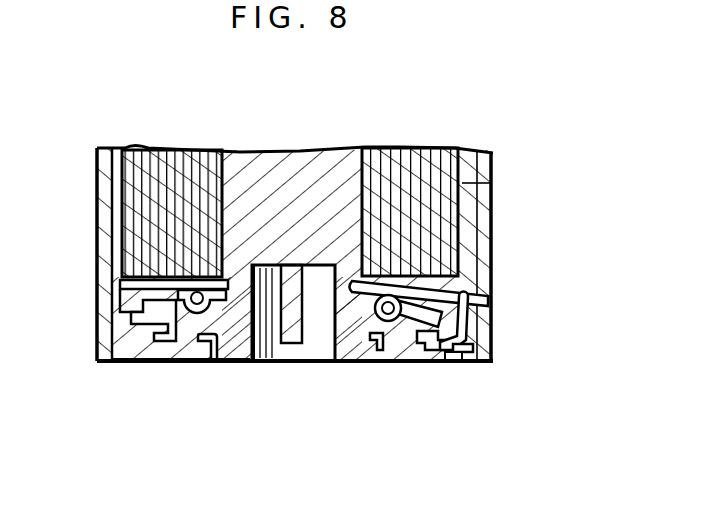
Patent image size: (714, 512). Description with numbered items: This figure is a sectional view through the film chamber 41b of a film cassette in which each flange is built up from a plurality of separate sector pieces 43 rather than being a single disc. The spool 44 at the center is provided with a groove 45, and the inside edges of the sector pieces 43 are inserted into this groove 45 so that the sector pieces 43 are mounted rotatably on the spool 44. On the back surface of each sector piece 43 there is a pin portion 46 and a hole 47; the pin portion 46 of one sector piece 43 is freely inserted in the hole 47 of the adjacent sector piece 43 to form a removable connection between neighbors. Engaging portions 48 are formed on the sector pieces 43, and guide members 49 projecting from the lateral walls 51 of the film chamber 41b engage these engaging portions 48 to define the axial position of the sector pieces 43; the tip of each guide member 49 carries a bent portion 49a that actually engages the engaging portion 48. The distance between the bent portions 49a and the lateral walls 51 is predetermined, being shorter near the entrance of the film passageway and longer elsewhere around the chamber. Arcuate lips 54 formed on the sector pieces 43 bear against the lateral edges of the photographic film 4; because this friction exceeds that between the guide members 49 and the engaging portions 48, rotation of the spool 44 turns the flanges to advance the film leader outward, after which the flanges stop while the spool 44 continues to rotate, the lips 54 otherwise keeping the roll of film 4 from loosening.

The photographic film 4 is at (463, 183).
The film chamber 41b is at (137, 337).
The sector piece 43 is at (453, 362).
The spool 44 is at (233, 361).
The groove 45 is at (350, 283).
The pin portion 46 is at (396, 362).
The hole 47 is at (338, 363).
The engaging portion 48 is at (128, 301).
The guide member 49 is at (190, 296).
The bent portion 49a is at (425, 295).
The lateral wall 51 is at (470, 338).
The arcuate lip 54 is at (470, 300).